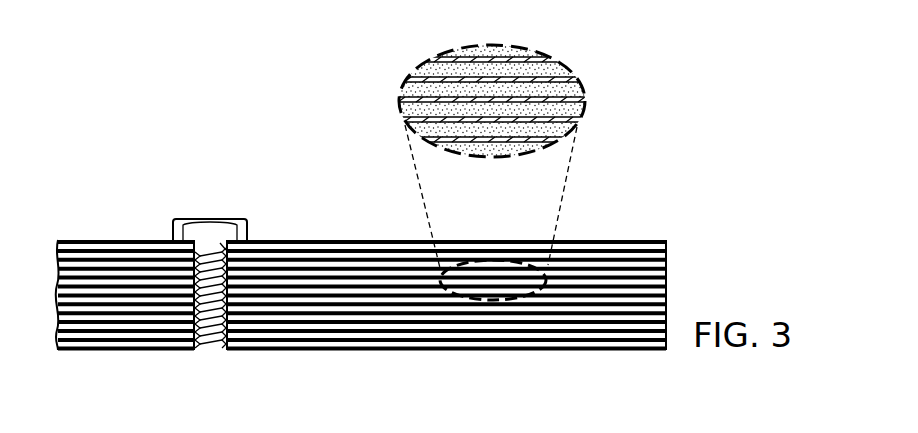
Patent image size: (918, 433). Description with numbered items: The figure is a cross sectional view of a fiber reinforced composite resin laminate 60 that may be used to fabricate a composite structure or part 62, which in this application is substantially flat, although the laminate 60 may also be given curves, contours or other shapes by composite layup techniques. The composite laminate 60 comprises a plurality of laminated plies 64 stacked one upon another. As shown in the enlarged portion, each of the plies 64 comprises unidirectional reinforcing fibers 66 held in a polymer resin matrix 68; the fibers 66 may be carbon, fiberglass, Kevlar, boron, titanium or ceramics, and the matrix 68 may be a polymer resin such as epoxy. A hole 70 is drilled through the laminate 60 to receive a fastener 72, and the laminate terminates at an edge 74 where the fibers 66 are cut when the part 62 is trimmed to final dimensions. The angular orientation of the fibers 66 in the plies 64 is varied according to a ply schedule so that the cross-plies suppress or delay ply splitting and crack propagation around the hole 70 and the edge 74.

The fiber reinforced composite resin laminate 60 is at (614, 216).
The composite structure or part 62 is at (118, 197).
The laminated plies 64 is at (135, 345).
The unidirectional reinforcing fibers 66 is at (512, 50).
The polymer resin matrix 68 is at (430, 68).
The hole 70 is at (238, 345).
The fastener 72 is at (207, 220).
The edge 74 is at (667, 275).